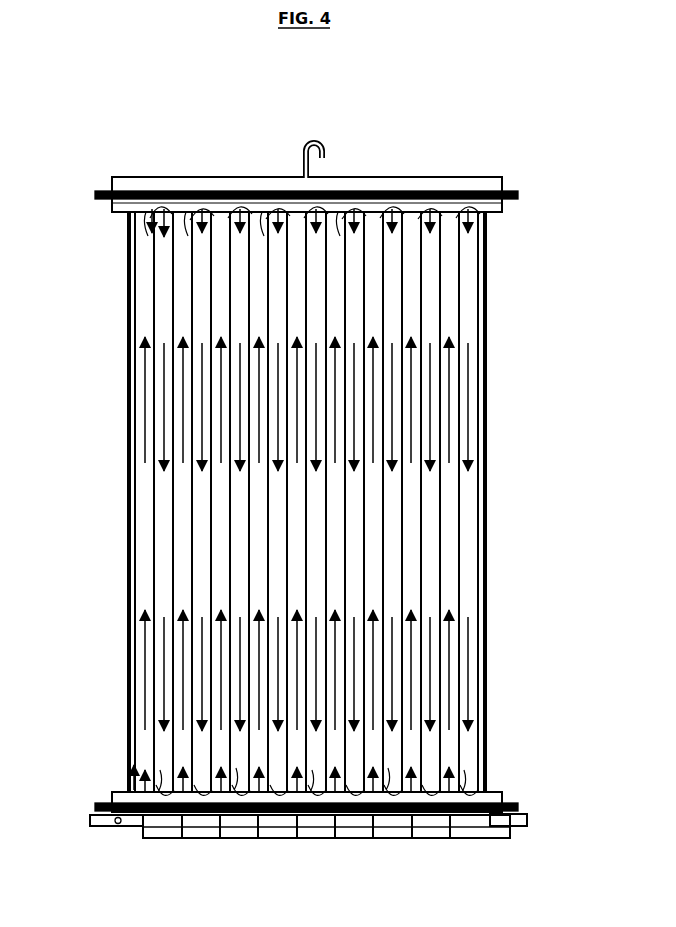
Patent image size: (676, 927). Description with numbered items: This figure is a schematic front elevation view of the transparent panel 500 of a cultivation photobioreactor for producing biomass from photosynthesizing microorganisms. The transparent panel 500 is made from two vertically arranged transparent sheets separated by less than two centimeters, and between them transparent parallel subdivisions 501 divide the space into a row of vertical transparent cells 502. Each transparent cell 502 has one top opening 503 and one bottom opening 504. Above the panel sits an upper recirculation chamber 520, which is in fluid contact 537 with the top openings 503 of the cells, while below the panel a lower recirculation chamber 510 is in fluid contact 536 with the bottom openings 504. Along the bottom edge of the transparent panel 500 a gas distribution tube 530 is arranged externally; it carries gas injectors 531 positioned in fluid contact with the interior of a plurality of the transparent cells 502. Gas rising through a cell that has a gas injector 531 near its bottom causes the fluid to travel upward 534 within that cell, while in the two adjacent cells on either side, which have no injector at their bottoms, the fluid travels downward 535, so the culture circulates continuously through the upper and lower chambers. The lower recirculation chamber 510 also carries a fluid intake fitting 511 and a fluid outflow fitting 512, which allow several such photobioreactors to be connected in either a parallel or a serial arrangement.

The transparent panel 500 is at (123, 474).
The transparent parallel subdivisions 501 is at (480, 318).
The transparent cells 502 is at (487, 470).
The top opening 503 is at (297, 146).
The bottom opening 504 is at (334, 759).
The lower recirculation chamber 510 is at (128, 827).
The fluid intake fitting 511 is at (100, 806).
The fluid outflow fitting 512 is at (510, 813).
The upper recirculation chamber 520 is at (460, 183).
The gas distribution tube 530 is at (440, 840).
The gas injectors 531 is at (398, 823).
The upward fluid travel 534 is at (360, 533).
The downward fluid travel 535 is at (468, 723).
The fluid contact with bottom openings 536 is at (118, 755).
The fluid contact with top openings 537 is at (160, 252).